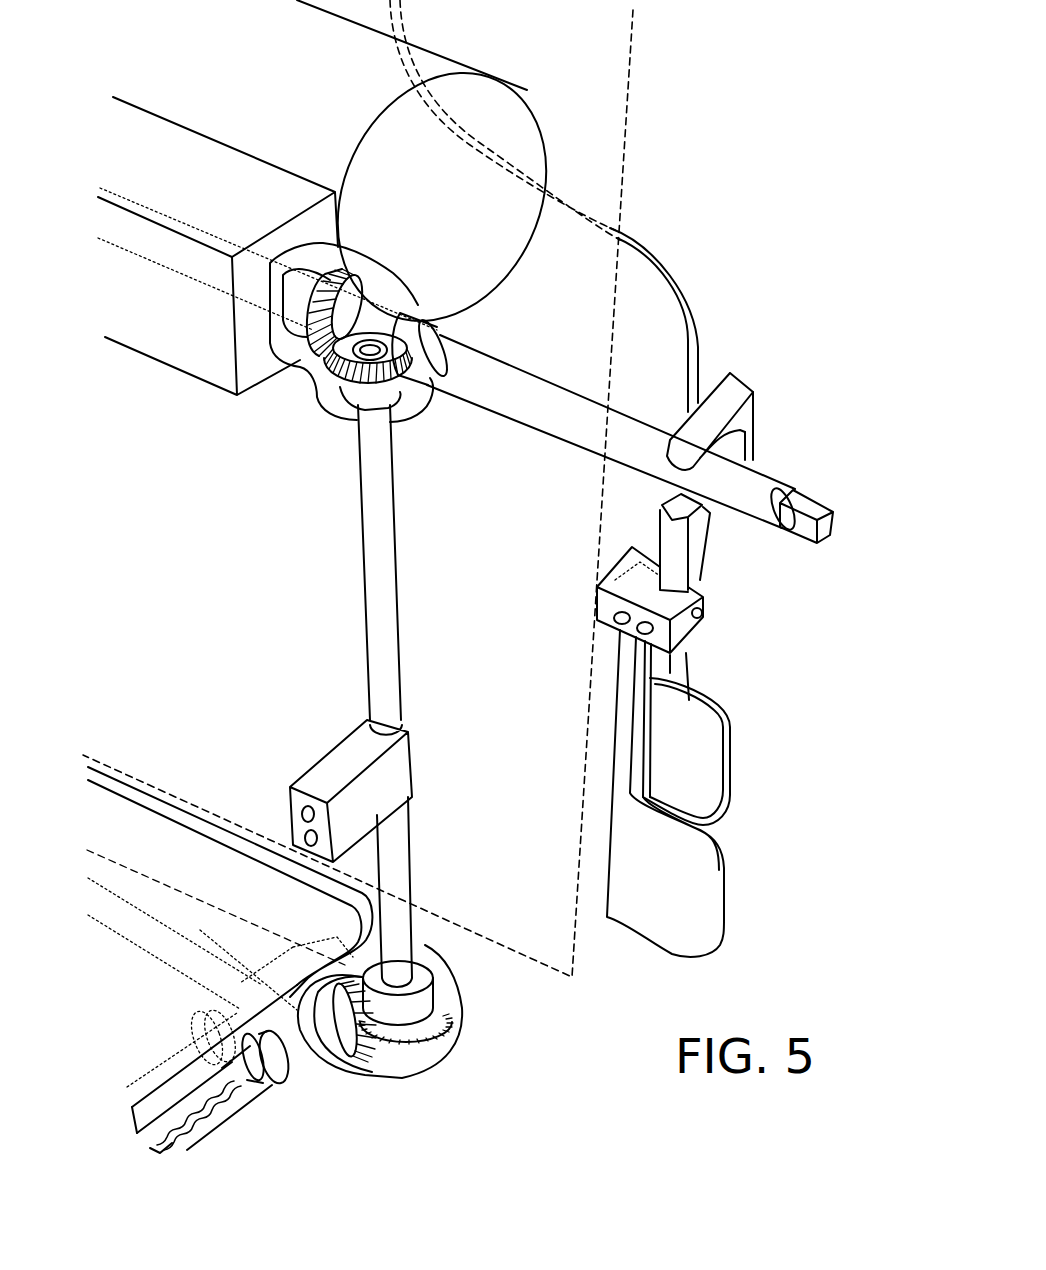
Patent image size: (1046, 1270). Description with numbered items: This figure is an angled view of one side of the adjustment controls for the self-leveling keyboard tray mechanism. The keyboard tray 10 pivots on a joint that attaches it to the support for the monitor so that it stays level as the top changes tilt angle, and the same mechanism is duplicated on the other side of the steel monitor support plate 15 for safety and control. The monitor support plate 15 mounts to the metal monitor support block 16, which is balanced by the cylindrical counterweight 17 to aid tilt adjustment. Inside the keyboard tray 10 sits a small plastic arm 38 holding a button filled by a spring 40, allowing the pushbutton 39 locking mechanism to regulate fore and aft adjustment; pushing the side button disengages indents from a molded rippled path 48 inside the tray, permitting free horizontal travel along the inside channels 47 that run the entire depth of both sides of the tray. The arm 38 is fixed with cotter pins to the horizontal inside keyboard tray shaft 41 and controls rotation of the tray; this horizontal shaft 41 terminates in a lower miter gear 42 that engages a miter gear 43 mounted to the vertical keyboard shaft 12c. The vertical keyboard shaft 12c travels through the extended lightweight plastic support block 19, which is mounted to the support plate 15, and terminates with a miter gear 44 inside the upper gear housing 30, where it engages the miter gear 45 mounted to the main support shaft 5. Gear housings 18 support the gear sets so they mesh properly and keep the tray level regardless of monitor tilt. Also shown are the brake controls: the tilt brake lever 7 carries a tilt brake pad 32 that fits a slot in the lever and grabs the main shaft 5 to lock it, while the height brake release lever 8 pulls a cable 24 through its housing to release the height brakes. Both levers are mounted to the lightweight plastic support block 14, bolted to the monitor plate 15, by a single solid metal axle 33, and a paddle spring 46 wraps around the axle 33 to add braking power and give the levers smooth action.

The main support shaft 5 is at (835, 523).
The tilt brake lever 7 is at (748, 407).
The height brake release lever 8 is at (713, 917).
The keyboard tray 10 is at (230, 1102).
The vertical keyboard shaft 12c is at (388, 618).
The support block 14 is at (705, 600).
The monitor support plate 15 is at (597, 113).
The metal monitor support block 16 is at (137, 165).
The cylindrical counterweight 17 is at (517, 115).
The gear housings 18 is at (443, 1037).
The lightweight plastic support block 19 is at (400, 770).
The cable 24 is at (693, 340).
The upper gear housing 30 is at (323, 393).
The tilt brake pad 32 is at (737, 450).
The axle 33 is at (703, 620).
The plastic arm 38 is at (240, 995).
The pushbutton 39 is at (277, 1055).
The spring 40 is at (193, 1037).
The horizontal keyboard shaft 41 is at (172, 940).
The lower miter gear 42 is at (363, 1053).
The miter gear 43 is at (445, 1007).
The miter gear 44 is at (395, 407).
The miter gear 45 is at (355, 280).
The paddle spring 46 is at (695, 578).
The inside channel 47 is at (170, 1077).
The rippled path 48 is at (147, 1142).